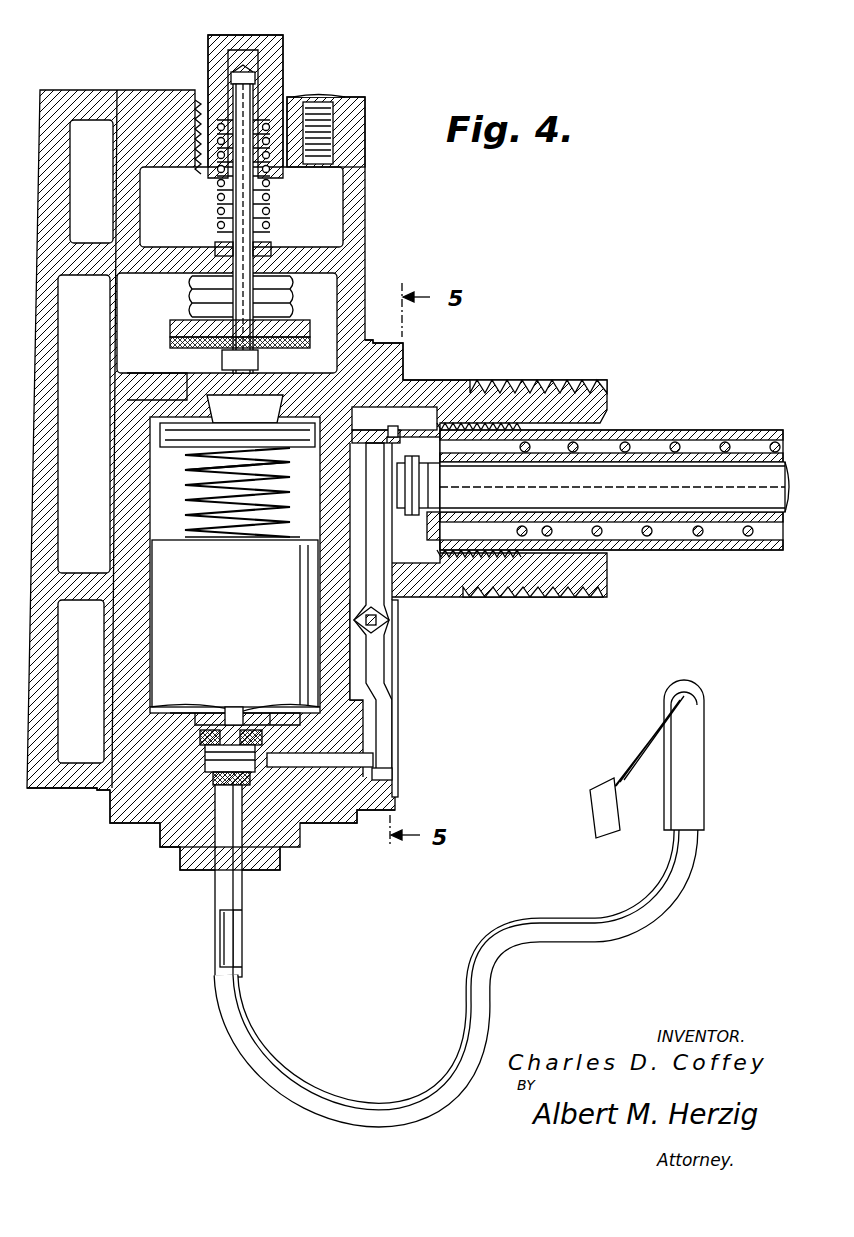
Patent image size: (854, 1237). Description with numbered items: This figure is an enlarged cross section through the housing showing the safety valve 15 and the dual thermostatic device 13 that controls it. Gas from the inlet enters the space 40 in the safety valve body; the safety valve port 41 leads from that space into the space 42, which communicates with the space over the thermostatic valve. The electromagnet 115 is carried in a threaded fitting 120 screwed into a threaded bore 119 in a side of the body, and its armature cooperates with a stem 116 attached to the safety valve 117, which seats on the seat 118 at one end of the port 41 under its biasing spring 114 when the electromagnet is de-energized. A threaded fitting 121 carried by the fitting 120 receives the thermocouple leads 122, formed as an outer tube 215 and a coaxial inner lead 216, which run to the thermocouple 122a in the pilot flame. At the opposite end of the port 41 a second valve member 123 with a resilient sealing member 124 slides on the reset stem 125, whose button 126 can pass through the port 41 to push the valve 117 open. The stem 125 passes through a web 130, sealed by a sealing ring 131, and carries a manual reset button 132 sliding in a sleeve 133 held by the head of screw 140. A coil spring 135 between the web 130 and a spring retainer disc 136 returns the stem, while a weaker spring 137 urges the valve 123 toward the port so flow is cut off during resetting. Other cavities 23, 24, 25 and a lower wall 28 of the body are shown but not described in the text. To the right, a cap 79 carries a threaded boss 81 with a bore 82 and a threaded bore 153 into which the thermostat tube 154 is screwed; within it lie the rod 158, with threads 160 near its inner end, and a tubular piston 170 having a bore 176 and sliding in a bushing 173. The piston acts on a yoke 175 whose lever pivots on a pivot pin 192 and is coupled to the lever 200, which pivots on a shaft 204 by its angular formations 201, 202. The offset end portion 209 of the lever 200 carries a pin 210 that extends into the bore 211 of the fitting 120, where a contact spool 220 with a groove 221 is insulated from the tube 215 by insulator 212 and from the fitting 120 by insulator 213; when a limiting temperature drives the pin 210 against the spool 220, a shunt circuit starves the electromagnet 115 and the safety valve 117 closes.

The dual thermostatic device 13 is at (718, 565).
The safety valve 15 is at (375, 212).
The cavity 23 is at (98, 176).
The cavity 24 is at (90, 451).
The cavity 25 is at (86, 687).
The housing bottom wall 28 is at (97, 788).
The space 40 is at (312, 472).
The safety valve port 41 is at (200, 375).
The space 42 is at (227, 323).
The cap 79 is at (428, 385).
The threaded boss 81 is at (555, 388).
The bore 82 is at (600, 552).
The biasing spring 114 is at (292, 532).
The electromagnet 115 is at (248, 612).
The stem 116 is at (290, 497).
The safety valve member 117 is at (158, 440).
The seat 118 is at (297, 405).
The threaded bore 119 is at (345, 825).
The threaded fitting 120 is at (308, 823).
The threaded fitting 121 is at (255, 875).
The thermocouple leads 122 is at (245, 1040).
The thermocouple 122a is at (704, 760).
The valve member 123 is at (290, 322).
The resilient seating and sealing member 124 is at (170, 342).
The reset stem 125 is at (253, 205).
The button 126 is at (258, 362).
The web 130 is at (180, 245).
The sealing ring 131 is at (271, 248).
The manual reset button 132 is at (283, 45).
The threaded sleeve 133 is at (203, 100).
The coil spring 135 is at (218, 192).
The spring retainer disc 136 is at (256, 82).
The weaker coil spring 137 is at (195, 292).
The screw 140 is at (330, 97).
The threaded bore 153 is at (490, 557).
The tube 154 is at (755, 440).
The rod 158 is at (614, 487).
The threads 160 is at (440, 485).
The tubular piston 170 is at (705, 445).
The bushing 173 is at (480, 430).
The yoke 175 is at (433, 540).
The bore 176 is at (643, 452).
The pivot pin 192 is at (398, 416).
The lever 200 is at (387, 665).
The angular formation 201 is at (389, 620).
The angular formation 202 is at (361, 616).
The shaft 204 is at (361, 626).
The offset end portion 209 is at (392, 775).
The pin 210 is at (360, 757).
The bore 211 is at (285, 855).
The insulator 212 is at (212, 786).
The insulator 213 is at (255, 705).
The outer tube 215 is at (242, 955).
The inner lead 216 is at (220, 928).
The contact spool 220 is at (205, 770).
The groove 221 is at (222, 705).